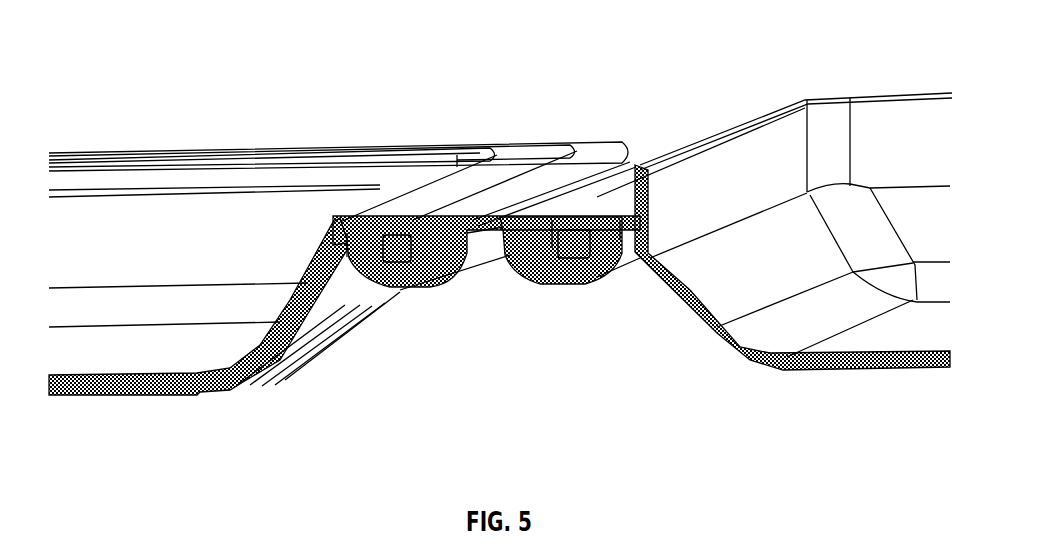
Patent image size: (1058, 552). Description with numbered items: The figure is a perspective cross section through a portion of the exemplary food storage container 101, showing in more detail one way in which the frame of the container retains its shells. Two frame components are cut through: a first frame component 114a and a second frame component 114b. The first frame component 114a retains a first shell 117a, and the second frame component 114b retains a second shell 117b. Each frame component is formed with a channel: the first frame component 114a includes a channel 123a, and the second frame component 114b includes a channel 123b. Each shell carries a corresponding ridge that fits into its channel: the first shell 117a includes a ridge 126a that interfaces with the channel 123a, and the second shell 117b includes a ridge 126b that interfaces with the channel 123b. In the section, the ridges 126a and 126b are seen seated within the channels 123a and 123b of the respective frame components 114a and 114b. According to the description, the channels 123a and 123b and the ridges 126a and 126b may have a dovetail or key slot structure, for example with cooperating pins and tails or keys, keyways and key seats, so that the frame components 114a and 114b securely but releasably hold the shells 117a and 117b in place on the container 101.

The food storage container 101 is at (731, 79).
The first frame component 114a is at (433, 248).
The second frame component 114b is at (532, 253).
The first shell 117a is at (287, 325).
The second shell 117b is at (638, 237).
The channel 123a is at (416, 246).
The channel 123b is at (555, 247).
The ridge 126a is at (396, 236).
The ridge 126b is at (576, 232).